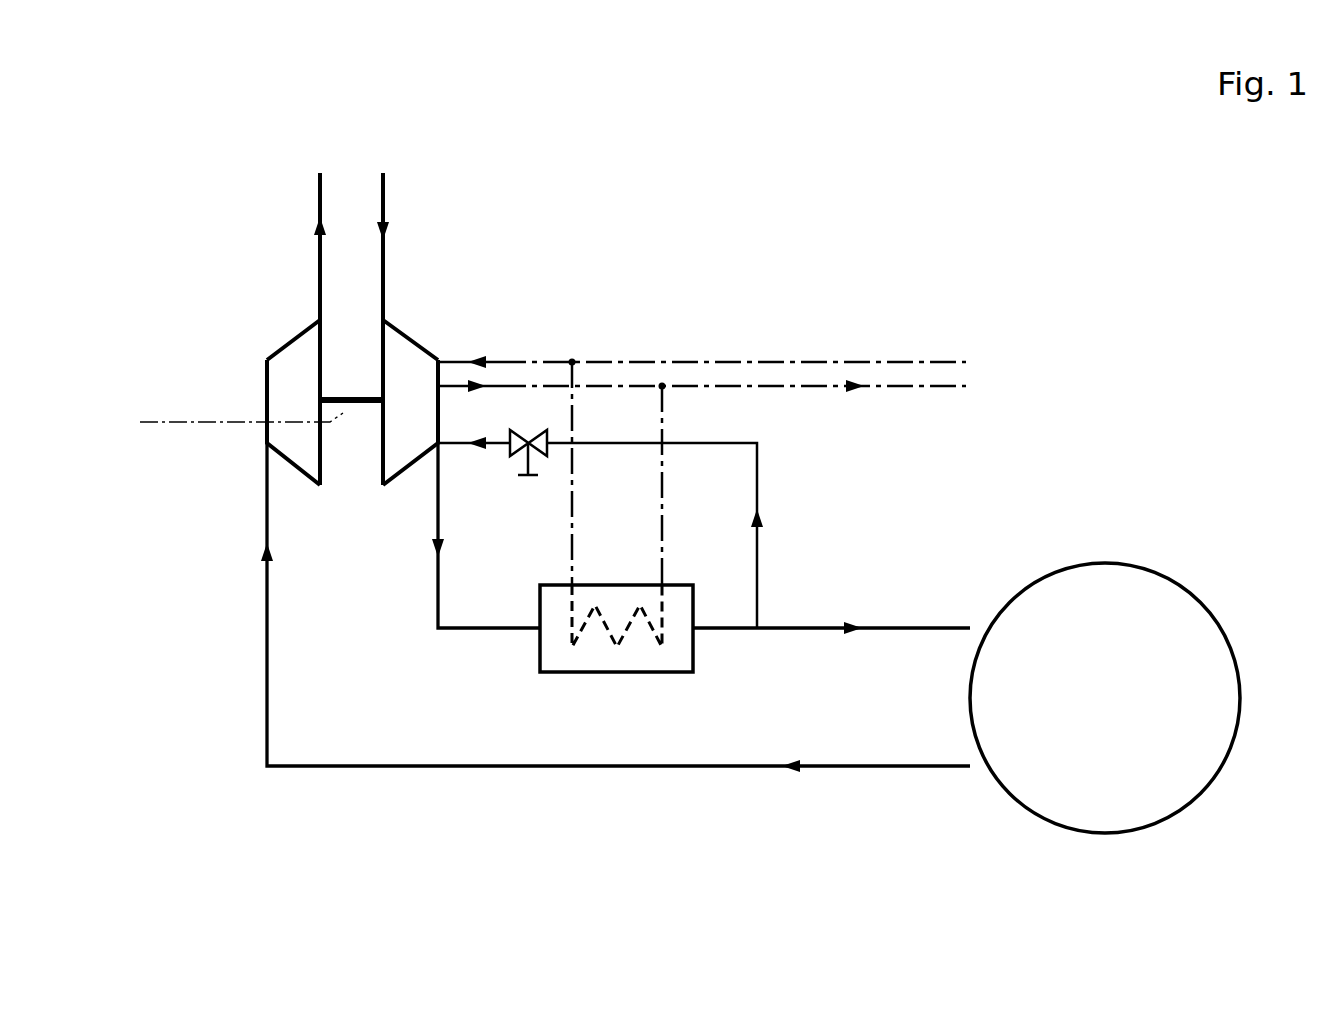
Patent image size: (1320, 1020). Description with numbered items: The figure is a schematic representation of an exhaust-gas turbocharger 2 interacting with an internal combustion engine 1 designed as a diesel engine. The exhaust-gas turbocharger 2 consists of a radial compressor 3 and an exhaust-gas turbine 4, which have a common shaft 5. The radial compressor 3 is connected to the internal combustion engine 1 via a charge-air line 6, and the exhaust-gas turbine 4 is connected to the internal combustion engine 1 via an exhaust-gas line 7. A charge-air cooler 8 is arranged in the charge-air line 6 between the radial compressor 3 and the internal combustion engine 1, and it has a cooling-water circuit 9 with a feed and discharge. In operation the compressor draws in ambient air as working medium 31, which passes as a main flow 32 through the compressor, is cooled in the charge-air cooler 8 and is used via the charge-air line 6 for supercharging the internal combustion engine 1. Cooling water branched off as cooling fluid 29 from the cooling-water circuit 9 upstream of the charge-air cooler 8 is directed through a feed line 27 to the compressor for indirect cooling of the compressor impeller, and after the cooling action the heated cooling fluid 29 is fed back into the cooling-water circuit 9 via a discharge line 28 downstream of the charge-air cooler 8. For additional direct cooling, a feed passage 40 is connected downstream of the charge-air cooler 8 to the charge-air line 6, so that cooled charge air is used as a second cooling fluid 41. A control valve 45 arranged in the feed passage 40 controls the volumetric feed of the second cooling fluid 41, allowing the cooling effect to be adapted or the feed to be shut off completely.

The internal combustion engine 1 is at (1105, 645).
The exhaust-gas turbocharger 2 is at (340, 364).
The radial compressor 3 is at (407, 377).
The exhaust-gas turbine 4 is at (298, 370).
The common shaft 5 is at (226, 422).
The charge-air line 6 is at (435, 510).
The exhaust-gas line 7 is at (267, 520).
The charge-air cooler 8 is at (640, 648).
The cooling-water circuit 9 is at (721, 362).
The feed line 27 is at (452, 360).
The discharge line 28 is at (517, 385).
The cooling fluid 29 is at (487, 352).
The working medium 31 is at (392, 228).
The main flow 32 is at (855, 637).
The feed passage 40 is at (712, 443).
The second cooling fluid 41 is at (766, 516).
The control valve 45 is at (522, 453).